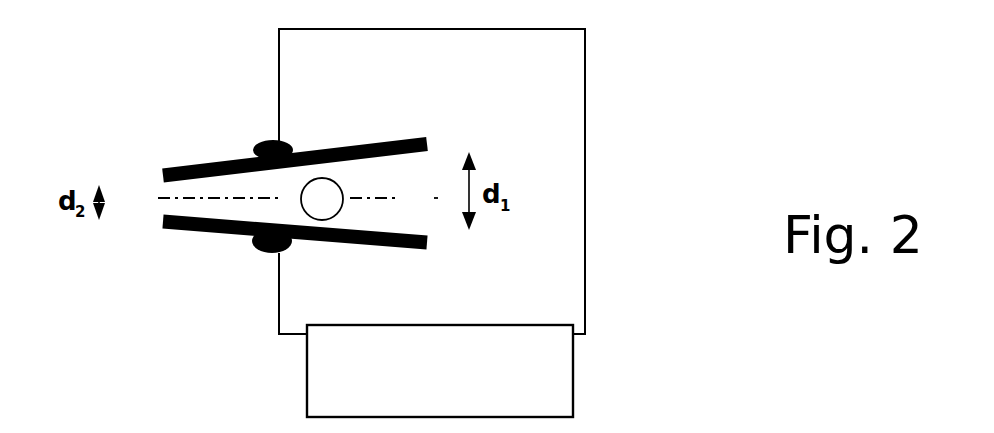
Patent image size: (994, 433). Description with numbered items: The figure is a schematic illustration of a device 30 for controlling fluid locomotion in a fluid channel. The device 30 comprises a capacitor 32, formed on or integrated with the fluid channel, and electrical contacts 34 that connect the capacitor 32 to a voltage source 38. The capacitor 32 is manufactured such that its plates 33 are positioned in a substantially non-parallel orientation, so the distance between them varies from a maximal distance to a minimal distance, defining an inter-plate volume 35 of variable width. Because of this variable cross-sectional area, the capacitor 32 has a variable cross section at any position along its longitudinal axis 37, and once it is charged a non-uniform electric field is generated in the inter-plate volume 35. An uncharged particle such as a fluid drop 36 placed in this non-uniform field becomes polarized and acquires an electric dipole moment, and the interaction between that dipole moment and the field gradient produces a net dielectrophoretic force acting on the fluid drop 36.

The device 30 is at (128, 45).
The capacitor 32 is at (331, 163).
The plates 33 is at (230, 162).
The electrical contacts 34 is at (268, 210).
The inter-plate volume 35 is at (260, 248).
The fluid drop 36 is at (330, 199).
The longitudinal axis 37 is at (298, 189).
The voltage source 38 is at (440, 371).